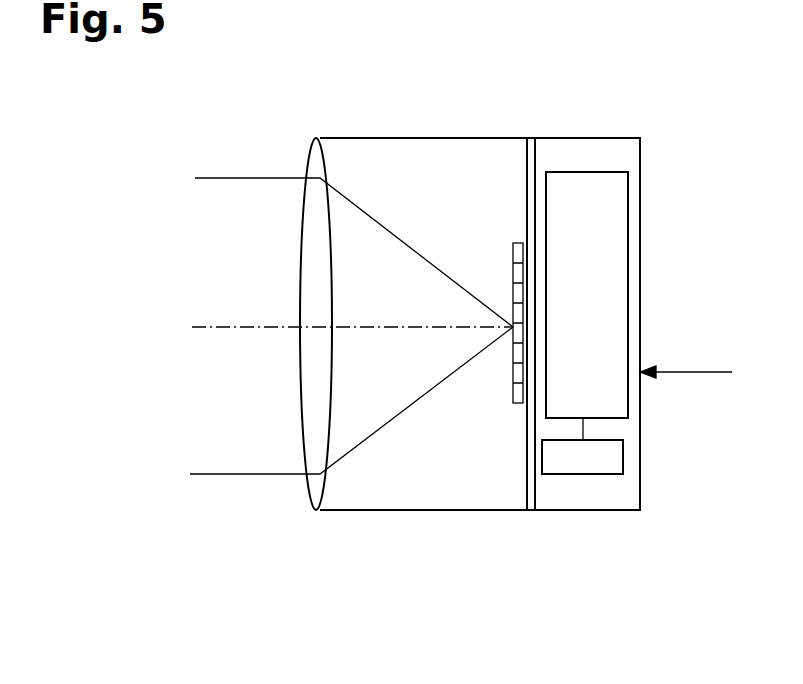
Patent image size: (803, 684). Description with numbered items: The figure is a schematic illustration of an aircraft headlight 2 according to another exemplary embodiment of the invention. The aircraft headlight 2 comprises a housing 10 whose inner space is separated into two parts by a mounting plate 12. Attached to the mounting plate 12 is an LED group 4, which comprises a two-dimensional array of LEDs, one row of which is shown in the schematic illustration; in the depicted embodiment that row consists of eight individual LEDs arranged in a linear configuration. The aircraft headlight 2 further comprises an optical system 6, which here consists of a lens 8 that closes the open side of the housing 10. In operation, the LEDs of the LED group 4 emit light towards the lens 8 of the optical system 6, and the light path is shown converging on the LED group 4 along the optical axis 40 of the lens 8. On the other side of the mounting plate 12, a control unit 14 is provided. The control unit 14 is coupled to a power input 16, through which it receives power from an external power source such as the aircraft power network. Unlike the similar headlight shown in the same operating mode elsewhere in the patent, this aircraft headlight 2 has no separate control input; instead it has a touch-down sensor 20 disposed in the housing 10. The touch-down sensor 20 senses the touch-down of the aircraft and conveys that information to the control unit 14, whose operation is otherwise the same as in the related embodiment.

The aircraft headlight 2 is at (268, 132).
The LED group 4 is at (512, 398).
The optical system 6 is at (275, 396).
The lens 8 is at (312, 221).
The housing 10 is at (627, 138).
The mounting plate 12 is at (533, 138).
The control unit 14 is at (583, 172).
The power input 16 is at (695, 372).
The touch-down sensor 20 is at (580, 474).
The optical axis 40 is at (222, 325).